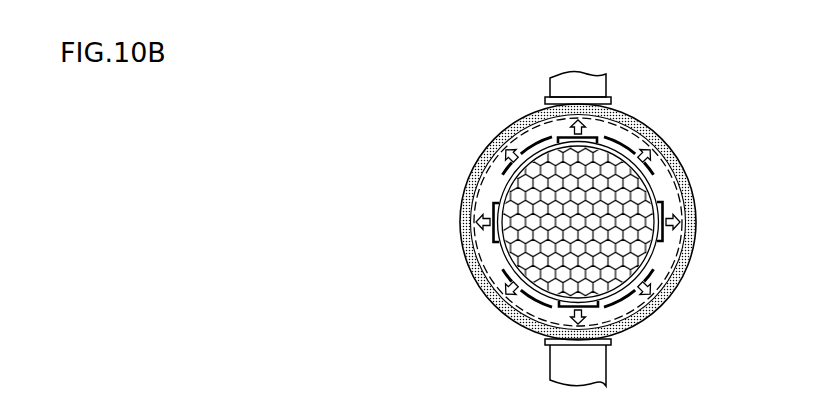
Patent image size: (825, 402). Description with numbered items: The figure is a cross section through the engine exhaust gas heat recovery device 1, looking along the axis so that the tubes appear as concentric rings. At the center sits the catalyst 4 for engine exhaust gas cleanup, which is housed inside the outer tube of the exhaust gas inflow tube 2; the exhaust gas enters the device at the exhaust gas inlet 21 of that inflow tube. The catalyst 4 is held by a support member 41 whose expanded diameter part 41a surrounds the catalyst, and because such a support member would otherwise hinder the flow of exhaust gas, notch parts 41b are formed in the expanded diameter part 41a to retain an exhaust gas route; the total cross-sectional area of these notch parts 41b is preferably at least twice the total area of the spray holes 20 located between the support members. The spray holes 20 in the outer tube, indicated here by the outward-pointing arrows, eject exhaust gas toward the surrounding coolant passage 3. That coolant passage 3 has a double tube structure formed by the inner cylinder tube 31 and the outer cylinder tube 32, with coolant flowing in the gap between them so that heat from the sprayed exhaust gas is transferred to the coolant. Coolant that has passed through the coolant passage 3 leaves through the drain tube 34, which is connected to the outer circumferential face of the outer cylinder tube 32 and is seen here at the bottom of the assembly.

The engine exhaust gas heat recovery device 1 is at (255, 107).
The exhaust gas inflow tube 2 is at (657, 255).
The coolant passage 3 is at (606, 190).
The catalyst 4 is at (530, 207).
The spray holes 20 is at (683, 228).
The exhaust gas inlet 21 is at (606, 90).
The inner cylinder tube 31 is at (676, 152).
The outer cylinder tube 32 is at (653, 137).
The drain tube 34 is at (550, 375).
The support member 41 is at (582, 238).
The expanded diameter part 41a is at (492, 237).
The notch parts 41b is at (493, 163).